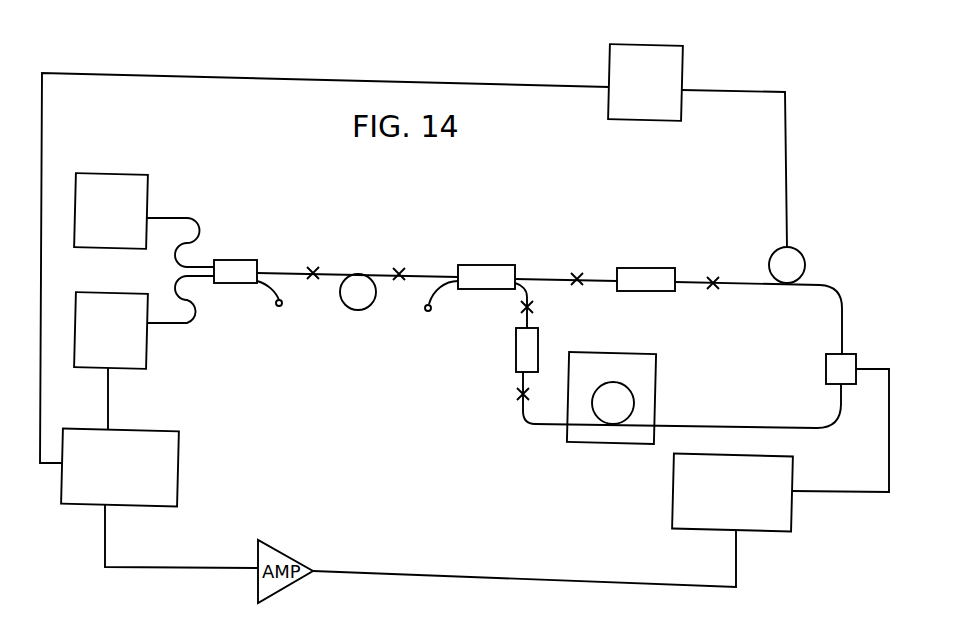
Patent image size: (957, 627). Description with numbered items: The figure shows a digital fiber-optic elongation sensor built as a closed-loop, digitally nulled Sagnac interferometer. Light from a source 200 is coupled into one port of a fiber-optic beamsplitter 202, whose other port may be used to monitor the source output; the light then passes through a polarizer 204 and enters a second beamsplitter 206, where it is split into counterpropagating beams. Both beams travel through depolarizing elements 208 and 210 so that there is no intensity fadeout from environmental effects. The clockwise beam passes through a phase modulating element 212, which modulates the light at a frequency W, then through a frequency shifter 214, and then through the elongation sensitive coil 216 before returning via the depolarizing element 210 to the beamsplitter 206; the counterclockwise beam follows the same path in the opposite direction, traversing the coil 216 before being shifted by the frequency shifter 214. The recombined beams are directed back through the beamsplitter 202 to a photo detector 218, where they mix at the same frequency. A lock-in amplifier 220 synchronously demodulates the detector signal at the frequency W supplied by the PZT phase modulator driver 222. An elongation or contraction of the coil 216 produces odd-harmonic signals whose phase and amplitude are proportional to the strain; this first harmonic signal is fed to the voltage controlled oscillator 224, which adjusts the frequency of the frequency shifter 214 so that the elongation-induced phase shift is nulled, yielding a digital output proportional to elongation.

The source 200 is at (147, 185).
The fiber-optic beamsplitter 202 is at (232, 260).
The polarizer 204 is at (342, 305).
The second beamsplitter 206 is at (483, 265).
The depolarizing element 208 is at (645, 268).
The depolarizing element 210 is at (516, 350).
The phase modulating element 212 is at (804, 277).
The frequency shifter 214 is at (826, 370).
The elongation sensitive coil 216 is at (655, 383).
The photo detector 218 is at (147, 357).
The lock-in amplifier 220 is at (178, 467).
The PZT phase modulator driver 222 is at (682, 72).
The voltage controlled oscillator 224 is at (792, 481).